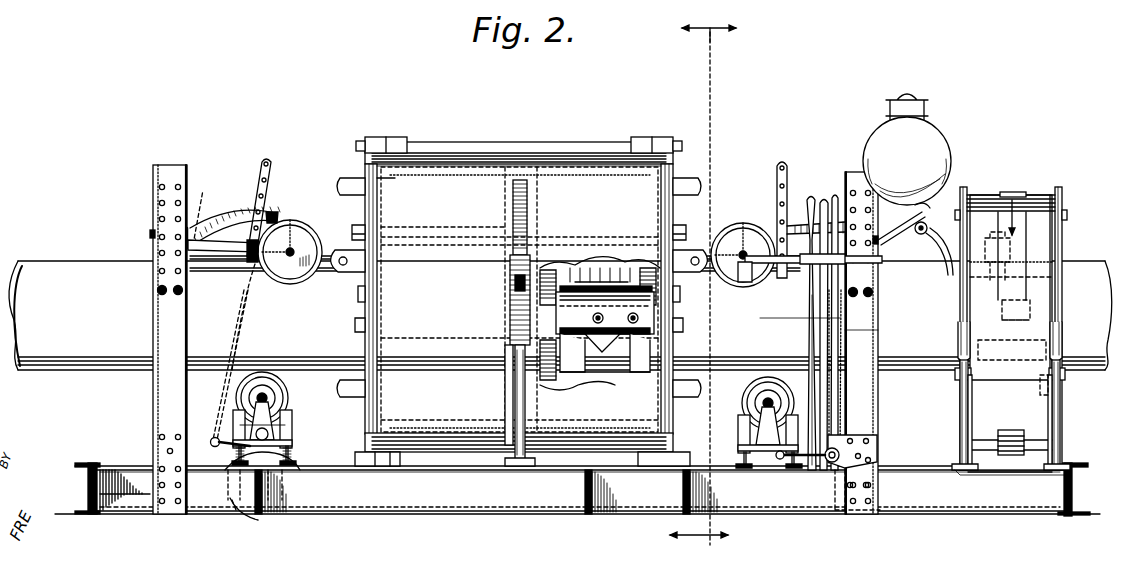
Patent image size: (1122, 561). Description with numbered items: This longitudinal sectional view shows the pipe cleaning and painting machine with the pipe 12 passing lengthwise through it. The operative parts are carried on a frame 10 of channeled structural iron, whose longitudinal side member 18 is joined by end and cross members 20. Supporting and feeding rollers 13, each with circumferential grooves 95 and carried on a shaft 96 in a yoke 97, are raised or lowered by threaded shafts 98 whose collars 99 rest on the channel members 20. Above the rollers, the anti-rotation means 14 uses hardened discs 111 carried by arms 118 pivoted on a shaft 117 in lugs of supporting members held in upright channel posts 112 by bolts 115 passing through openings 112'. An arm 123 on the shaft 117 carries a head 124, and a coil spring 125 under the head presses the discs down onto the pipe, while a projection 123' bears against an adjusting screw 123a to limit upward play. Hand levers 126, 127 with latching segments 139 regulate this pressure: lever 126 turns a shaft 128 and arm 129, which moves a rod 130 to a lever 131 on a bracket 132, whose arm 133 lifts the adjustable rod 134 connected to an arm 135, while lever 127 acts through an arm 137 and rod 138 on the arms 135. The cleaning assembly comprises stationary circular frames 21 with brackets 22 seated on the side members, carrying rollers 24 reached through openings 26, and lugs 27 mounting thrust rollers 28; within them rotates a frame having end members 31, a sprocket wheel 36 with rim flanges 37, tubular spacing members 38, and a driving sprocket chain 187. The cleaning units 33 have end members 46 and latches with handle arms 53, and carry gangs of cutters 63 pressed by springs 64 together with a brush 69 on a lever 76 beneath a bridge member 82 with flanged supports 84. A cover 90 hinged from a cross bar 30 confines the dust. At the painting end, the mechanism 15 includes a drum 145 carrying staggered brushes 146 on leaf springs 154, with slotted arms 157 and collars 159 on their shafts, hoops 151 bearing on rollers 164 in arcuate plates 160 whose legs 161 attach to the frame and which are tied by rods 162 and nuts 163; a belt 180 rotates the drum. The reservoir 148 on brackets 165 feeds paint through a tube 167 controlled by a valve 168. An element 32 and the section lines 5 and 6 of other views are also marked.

The section line 5 is at (731, 282).
The section line 6 is at (691, 281).
The frame 10 is at (90, 464).
The pipe 12 is at (82, 265).
The supporting and pipe moving rollers 13 is at (306, 418).
The means for preventing rotation of the pipe 14 is at (290, 220).
The painting structure 15 is at (964, 184).
The longitudinal side member 18 is at (580, 490).
The end and cross members 20 is at (88, 484).
The circular frame members 21 is at (362, 228).
The lower brackets 22 is at (390, 462).
The rollers 24 is at (364, 300).
The radial openings 26 is at (365, 294).
The laterally extending lugs 27 is at (378, 178).
The rollers 28 is at (345, 182).
The cross bar 30 is at (532, 141).
The end frame members 31 is at (387, 137).
The bolt 32 is at (358, 140).
The pipe cleaning units 33 is at (612, 380).
The sprocket wheel 36 is at (512, 352).
The radial flange or rim portion 37 is at (503, 182).
The tubular spacing members 38 is at (442, 226).
The end members 46 is at (560, 385).
The radially extending arms 53 is at (580, 395).
The pipe cleaning discs or cutters 63 is at (542, 312).
The coil spring 64 is at (510, 268).
The brush 69 is at (612, 300).
The lever 76 is at (618, 345).
The bridge member 82 is at (656, 310).
The flanges 84 is at (650, 330).
The cover or housing 90 is at (469, 376).
The circumferentially extending grooves 95 is at (262, 372).
The shaft 96 is at (266, 396).
The yoke or frame 97 is at (296, 424).
The threaded shafts 98 is at (235, 452).
The enlarged hubs or collars 99 is at (296, 458).
The hardened discs 111 is at (310, 246).
The upright supporting posts 112 is at (515, 321).
The openings 112' is at (485, 321).
The bolts 115 is at (160, 292).
The shafts 117 is at (148, 235).
The spaced arms 118 is at (260, 268).
The arm 123 is at (517, 209).
The integral projection 123' is at (214, 200).
The adjusting screw 123a is at (150, 230).
The enlarged head 124 is at (272, 205).
The coil spring 125 is at (262, 224).
The hand operated lever 126 is at (822, 336).
The hand operated lever 127 is at (824, 353).
The shaft 128 is at (845, 450).
The downwardly extending arm 129 is at (855, 490).
The longitudinally extending rod 130 is at (388, 510).
The lever 131 is at (282, 470).
The bracket 132 is at (245, 466).
The laterally extending arm 133 is at (214, 432).
The rod 134 is at (224, 380).
The arm 135 is at (230, 266).
The arm 137 is at (848, 466).
The vertically extending rod 138 is at (772, 322).
The segments 139 is at (808, 280).
The housing or drum 145 is at (1040, 232).
The brushes 146 is at (972, 278).
The paint reservoir 148 is at (938, 145).
The bands or hoops 151 is at (1058, 260).
The leaf spring 154 is at (996, 352).
The relatively stationary arm 157 is at (1060, 448).
The collars 159 is at (955, 440).
The arcuate plates 160 is at (958, 424).
The downwardly extending legs 161 is at (955, 466).
The tie rods 162 is at (1010, 426).
The nuts 163 is at (958, 388).
The rollers 164 is at (960, 330).
The brackets 165 is at (906, 238).
The tube 167 is at (922, 282).
The valve 168 is at (922, 228).
The belt 180 is at (1018, 190).
The sprocket chain 187 is at (515, 284).